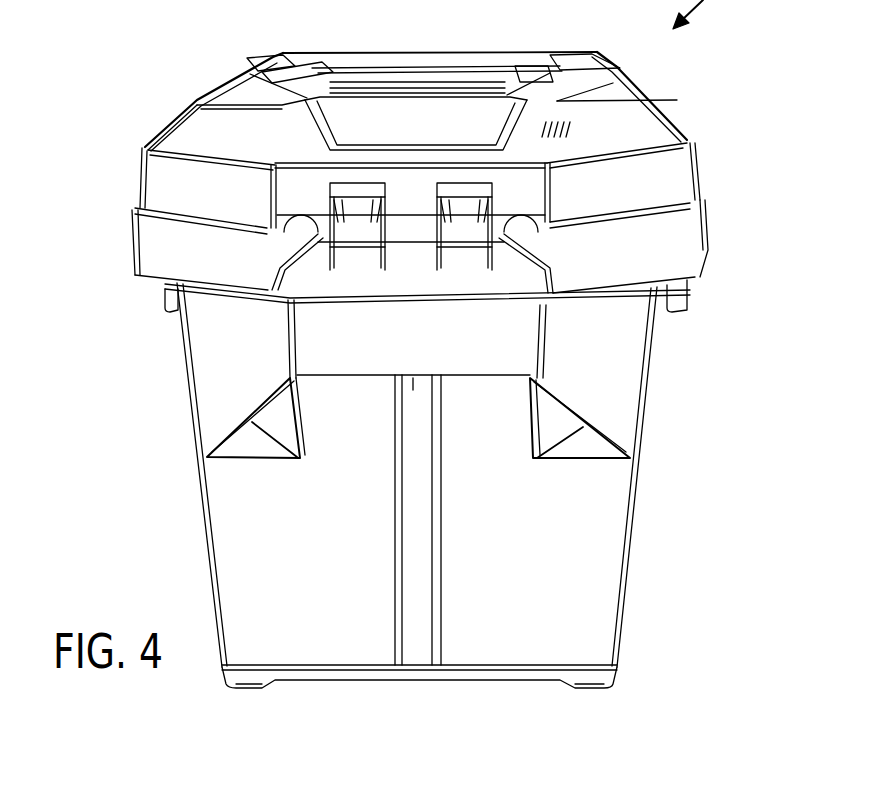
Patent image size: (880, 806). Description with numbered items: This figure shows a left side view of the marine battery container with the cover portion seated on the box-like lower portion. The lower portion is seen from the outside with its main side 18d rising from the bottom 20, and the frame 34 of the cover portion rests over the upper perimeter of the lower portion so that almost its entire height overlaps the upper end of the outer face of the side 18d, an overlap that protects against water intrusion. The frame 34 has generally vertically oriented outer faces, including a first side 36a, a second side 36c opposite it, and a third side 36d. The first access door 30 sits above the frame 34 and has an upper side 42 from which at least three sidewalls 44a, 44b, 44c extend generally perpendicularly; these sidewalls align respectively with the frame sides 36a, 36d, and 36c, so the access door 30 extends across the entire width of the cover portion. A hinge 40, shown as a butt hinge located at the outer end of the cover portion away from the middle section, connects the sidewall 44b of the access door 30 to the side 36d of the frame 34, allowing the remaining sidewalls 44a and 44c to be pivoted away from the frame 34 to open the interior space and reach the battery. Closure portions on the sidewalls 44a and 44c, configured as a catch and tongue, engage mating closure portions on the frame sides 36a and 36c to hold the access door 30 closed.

The main side 18d is at (562, 567).
The bottom 20 is at (553, 682).
The first access door 30 is at (627, 138).
The frame 34 is at (163, 265).
The first side of the frame 36a is at (698, 253).
The second side of the frame 36c is at (133, 238).
The third side of the frame 36d is at (317, 282).
The hinge 40 is at (472, 264).
The upper side 42 is at (223, 132).
The sidewall 44a is at (697, 178).
The sidewall 44b is at (515, 182).
The sidewall 44c is at (142, 182).